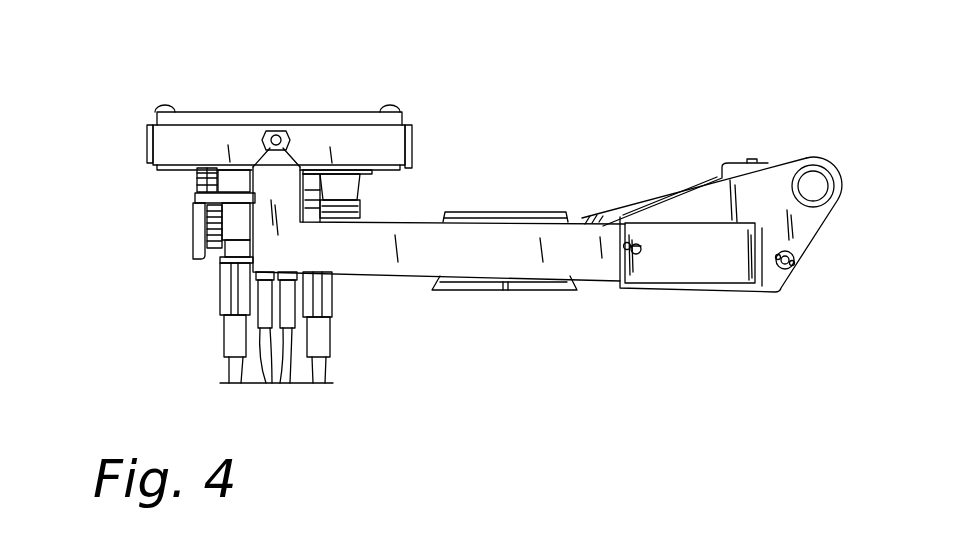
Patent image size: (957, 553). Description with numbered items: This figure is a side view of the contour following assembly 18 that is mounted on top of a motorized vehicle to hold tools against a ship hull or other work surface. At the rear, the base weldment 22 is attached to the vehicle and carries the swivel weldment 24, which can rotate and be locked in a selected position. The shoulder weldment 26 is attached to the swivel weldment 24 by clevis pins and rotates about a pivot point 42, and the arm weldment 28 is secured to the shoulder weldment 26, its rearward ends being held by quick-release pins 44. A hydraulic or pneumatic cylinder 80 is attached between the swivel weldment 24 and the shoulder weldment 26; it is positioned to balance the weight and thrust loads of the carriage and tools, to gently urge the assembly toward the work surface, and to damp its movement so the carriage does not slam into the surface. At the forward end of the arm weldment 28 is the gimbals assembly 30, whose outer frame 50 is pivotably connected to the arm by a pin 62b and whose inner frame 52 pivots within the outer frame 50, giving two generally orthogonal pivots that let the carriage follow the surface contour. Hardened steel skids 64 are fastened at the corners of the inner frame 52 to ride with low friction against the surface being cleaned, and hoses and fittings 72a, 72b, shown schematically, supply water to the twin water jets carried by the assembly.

The contour following assembly 18 is at (482, 123).
The base weldment 22 is at (549, 292).
The swivel weldment 24 is at (505, 212).
The shoulder weldment 26 is at (703, 283).
The arm weldment 28 is at (403, 274).
The gimbals assembly 30 is at (147, 137).
The pivot point 42 is at (795, 268).
The quick-release pins 44 is at (638, 247).
The outer frame 50 is at (147, 152).
The inner frame 52 is at (248, 112).
The pin 62b is at (290, 137).
The hardened steel skids 64 is at (160, 107).
The hoses and fittings 72a is at (335, 368).
The hoses and fittings 72b is at (228, 370).
The hydraulic or pneumatic cylinder 80 is at (636, 205).